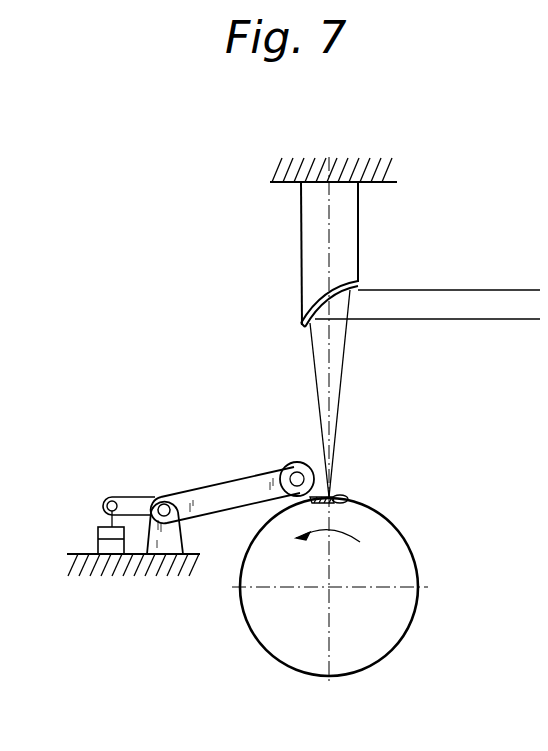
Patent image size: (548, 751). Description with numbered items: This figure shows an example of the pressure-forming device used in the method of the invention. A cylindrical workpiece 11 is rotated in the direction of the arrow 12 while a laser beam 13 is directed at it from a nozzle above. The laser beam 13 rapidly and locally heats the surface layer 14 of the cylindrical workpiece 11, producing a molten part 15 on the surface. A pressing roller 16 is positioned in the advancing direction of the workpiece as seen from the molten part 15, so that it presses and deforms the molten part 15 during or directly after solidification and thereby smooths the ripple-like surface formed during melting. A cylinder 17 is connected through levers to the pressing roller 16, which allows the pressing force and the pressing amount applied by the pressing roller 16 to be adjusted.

The cylindrical workpiece 11 is at (400, 552).
The arrow 12 is at (348, 535).
The laser beam 13 is at (333, 398).
The surface layer 14 is at (333, 492).
The molten part 15 is at (345, 503).
The pressing roller 16 is at (300, 461).
The cylinder 17 is at (98, 540).